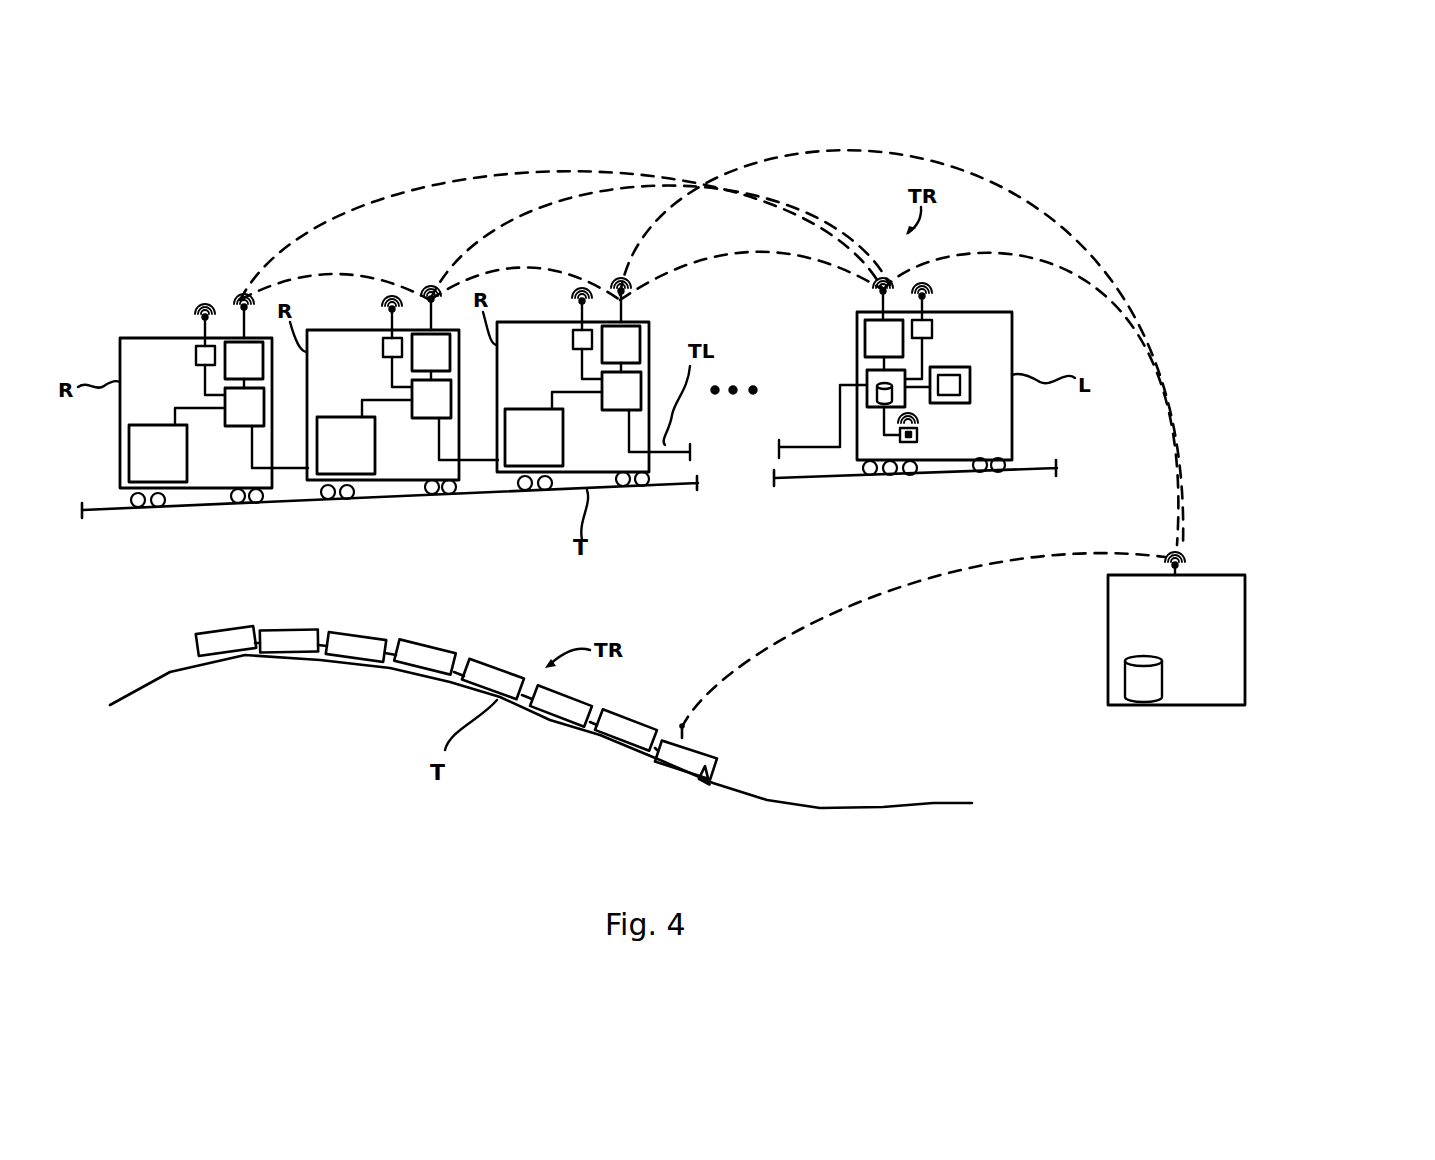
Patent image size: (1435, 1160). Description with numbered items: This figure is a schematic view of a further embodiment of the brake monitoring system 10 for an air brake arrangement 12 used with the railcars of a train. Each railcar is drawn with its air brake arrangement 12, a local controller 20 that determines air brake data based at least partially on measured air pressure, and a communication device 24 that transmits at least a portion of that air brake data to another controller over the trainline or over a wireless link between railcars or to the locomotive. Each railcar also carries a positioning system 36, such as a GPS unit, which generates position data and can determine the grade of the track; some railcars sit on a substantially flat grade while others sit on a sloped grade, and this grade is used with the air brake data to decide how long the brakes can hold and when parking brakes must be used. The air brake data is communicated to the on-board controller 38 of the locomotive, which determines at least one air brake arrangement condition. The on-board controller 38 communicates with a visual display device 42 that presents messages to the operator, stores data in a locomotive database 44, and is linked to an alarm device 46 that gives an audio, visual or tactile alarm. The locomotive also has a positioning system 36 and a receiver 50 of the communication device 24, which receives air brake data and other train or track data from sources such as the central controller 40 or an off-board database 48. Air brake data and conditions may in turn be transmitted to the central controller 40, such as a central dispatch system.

The brake monitoring system 10 is at (1199, 290).
The air brake arrangement 12 is at (346, 445).
The local controller 20 is at (433, 399).
The communication device 24 is at (432, 352).
The positioning system 36 is at (196, 355).
The on-board controller 38 is at (877, 410).
The central controller 40 is at (1250, 663).
The visual display device 42 is at (963, 365).
The locomotive database 44 is at (868, 392).
The alarm device 46 is at (918, 437).
The off-board database 48 is at (1123, 677).
The receiver 50 is at (884, 338).